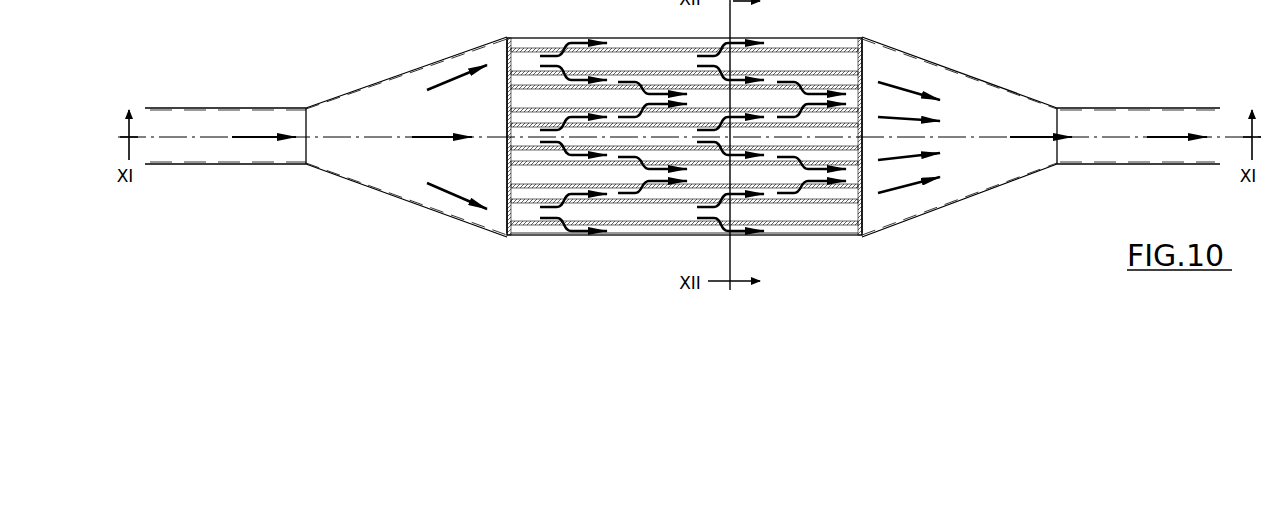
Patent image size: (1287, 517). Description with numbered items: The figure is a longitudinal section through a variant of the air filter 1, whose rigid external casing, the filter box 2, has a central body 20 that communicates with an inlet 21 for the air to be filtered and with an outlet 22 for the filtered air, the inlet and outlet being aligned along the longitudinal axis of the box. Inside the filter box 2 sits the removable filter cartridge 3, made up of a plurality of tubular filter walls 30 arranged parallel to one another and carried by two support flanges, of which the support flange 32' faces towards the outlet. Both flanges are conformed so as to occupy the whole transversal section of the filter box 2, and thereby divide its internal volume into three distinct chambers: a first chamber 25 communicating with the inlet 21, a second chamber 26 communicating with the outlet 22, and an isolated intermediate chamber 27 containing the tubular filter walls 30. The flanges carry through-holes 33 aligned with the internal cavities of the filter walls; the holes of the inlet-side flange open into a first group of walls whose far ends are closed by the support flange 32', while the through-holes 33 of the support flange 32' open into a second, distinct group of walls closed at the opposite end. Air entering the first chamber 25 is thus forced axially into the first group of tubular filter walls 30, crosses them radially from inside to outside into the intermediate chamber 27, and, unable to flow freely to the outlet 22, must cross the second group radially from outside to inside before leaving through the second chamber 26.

The air filter 1 is at (213, 106).
The filter box 2 is at (391, 200).
The filter cartridge 3 is at (872, 218).
The central body 20 is at (660, 236).
The inlet 21 is at (190, 165).
The outlet 22 is at (1160, 108).
The first chamber 25 is at (389, 125).
The second chamber 26 is at (971, 123).
The intermediate chamber 27 is at (527, 233).
The tubular filter walls 30 is at (640, 0).
The support flange 32' is at (925, 122).
The through-holes 33 is at (487, 0).